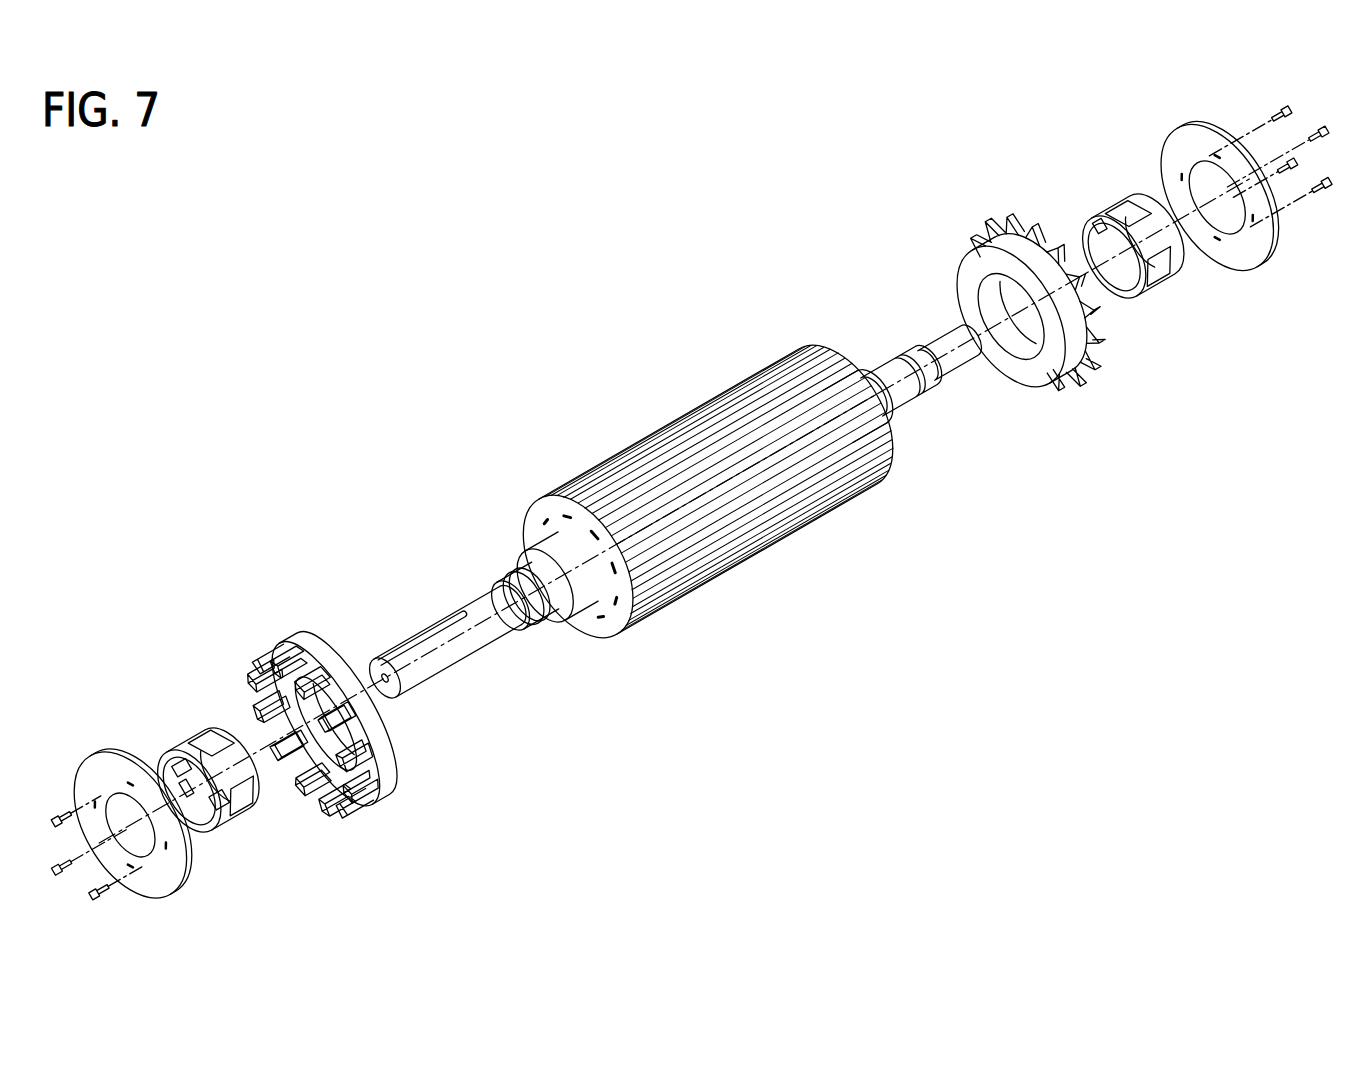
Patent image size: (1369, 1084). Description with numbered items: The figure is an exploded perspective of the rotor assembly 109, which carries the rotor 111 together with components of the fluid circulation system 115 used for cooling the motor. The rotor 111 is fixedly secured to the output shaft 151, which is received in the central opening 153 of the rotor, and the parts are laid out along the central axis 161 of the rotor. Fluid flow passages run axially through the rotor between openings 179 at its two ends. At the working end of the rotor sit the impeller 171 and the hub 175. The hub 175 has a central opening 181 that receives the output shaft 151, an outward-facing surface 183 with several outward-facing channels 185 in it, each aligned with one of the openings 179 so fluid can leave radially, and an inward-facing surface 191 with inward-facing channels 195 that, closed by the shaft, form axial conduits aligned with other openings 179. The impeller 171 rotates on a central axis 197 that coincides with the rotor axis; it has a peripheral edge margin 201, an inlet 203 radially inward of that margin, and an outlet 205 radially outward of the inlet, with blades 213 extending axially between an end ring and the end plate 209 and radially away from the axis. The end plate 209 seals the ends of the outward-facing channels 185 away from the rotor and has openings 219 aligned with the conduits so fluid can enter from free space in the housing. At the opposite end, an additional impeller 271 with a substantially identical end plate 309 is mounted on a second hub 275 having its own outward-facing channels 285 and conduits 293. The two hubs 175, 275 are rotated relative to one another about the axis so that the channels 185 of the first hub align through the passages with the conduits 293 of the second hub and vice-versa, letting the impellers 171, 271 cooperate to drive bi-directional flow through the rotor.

The rotor assembly 109 is at (298, 298).
The rotor 111 is at (640, 440).
The fluid circulation system 115 is at (273, 557).
The output shaft 151 is at (433, 674).
The central opening 153 is at (607, 617).
The central axis 161 is at (1198, 162).
The impeller 171 is at (320, 805).
The hub 175 is at (172, 730).
The openings 179 is at (556, 538).
The central opening 181 is at (217, 803).
The outward-facing surface 183 is at (222, 747).
The outward-facing channel 185 is at (252, 787).
The inward-facing surface 191 is at (172, 778).
The inward-facing channels 195 is at (177, 790).
The central axis 197 is at (1272, 252).
The peripheral edge margin 201 is at (268, 650).
The inlet 203 is at (287, 695).
The outlet 205 is at (250, 722).
The end plate 209 is at (142, 883).
The blades 213 is at (355, 772).
The openings 219 is at (97, 847).
The additional impeller 271 is at (1082, 388).
The second hub 275 is at (1140, 310).
The outward-facing channels 285 is at (1140, 207).
The conduits 293 is at (1090, 227).
The end plate 309 is at (1238, 258).